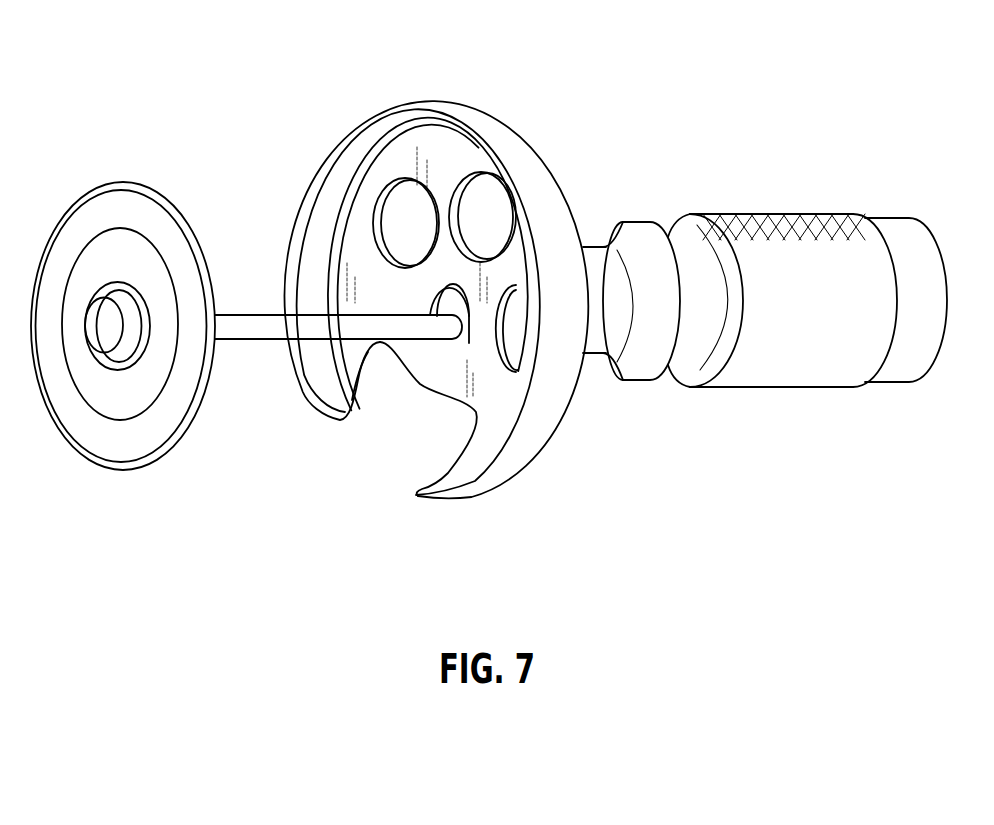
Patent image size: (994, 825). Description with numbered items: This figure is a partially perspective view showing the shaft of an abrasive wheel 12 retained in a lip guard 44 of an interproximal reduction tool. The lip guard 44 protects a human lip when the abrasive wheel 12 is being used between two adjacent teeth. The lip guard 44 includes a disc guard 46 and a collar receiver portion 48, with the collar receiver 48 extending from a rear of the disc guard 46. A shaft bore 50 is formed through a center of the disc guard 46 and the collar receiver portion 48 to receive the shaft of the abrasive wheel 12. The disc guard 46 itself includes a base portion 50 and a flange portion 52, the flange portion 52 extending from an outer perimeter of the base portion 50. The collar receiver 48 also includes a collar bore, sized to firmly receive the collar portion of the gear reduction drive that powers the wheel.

The abrasive wheel 12 is at (102, 490).
The lip guard 44 is at (765, 268).
The disc guard 46 is at (477, 90).
The collar receiver portion 48 is at (778, 380).
The base portion 50 is at (432, 375).
The flange portion 52 is at (523, 165).